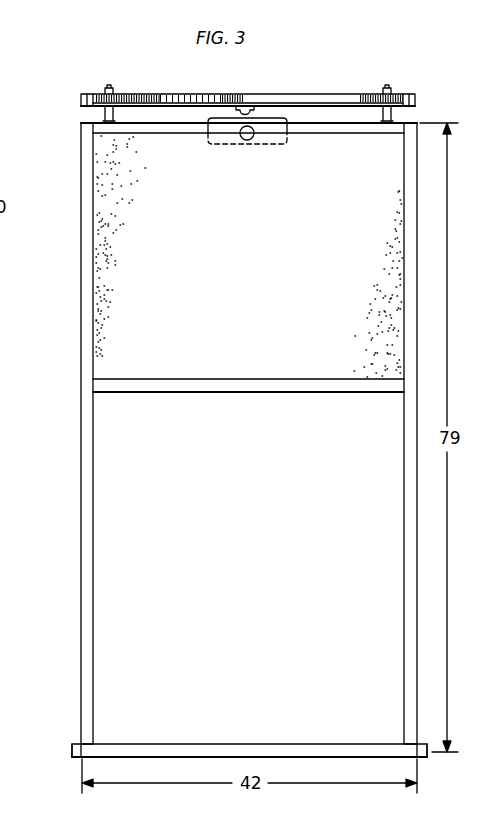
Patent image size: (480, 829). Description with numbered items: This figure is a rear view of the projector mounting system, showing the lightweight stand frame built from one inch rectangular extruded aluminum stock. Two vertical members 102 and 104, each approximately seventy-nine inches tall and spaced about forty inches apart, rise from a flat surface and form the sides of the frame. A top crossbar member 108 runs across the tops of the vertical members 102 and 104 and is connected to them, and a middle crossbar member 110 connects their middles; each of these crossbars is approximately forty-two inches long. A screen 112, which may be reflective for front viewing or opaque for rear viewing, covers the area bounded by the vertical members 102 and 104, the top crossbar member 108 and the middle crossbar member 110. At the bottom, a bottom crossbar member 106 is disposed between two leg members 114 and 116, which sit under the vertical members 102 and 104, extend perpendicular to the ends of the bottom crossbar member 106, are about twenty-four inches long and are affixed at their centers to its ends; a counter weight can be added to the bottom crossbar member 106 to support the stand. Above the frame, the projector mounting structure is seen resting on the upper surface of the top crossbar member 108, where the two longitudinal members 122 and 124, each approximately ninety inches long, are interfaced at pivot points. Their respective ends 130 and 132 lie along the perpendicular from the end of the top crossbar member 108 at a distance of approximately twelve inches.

The first vertical member 102 is at (80, 487).
The second vertical member 104 is at (404, 596).
The bottom crossbar member 106 is at (250, 743).
The top crossbar member 108 is at (322, 134).
The middle crossbar member 110 is at (247, 394).
The screen 112 is at (270, 272).
The leg member 114 is at (72, 752).
The leg member 116 is at (426, 758).
The longitudinal member 122 is at (347, 92).
The longitudinal member 124 is at (148, 93).
The end of longitudinal member 130 is at (407, 94).
The end of longitudinal member 132 is at (86, 95).